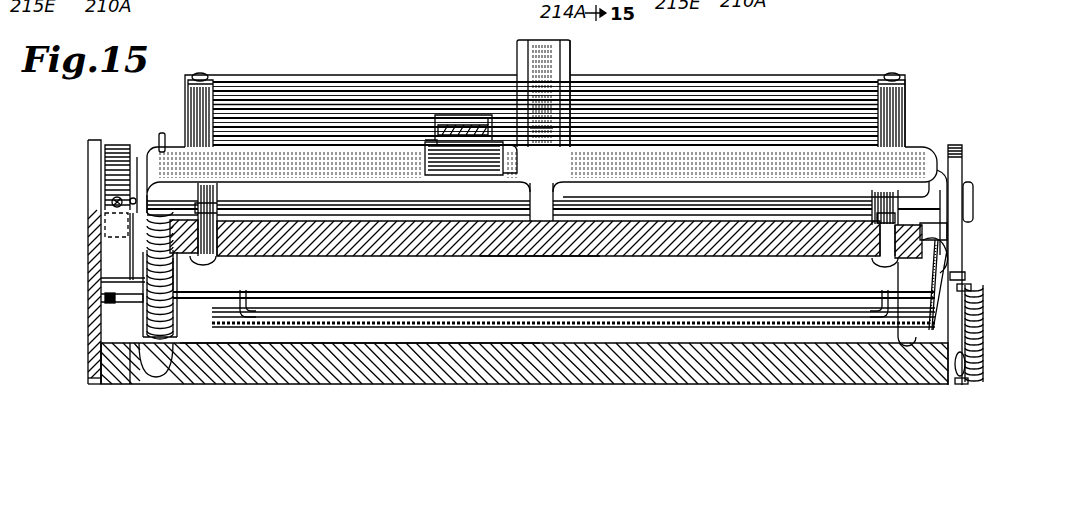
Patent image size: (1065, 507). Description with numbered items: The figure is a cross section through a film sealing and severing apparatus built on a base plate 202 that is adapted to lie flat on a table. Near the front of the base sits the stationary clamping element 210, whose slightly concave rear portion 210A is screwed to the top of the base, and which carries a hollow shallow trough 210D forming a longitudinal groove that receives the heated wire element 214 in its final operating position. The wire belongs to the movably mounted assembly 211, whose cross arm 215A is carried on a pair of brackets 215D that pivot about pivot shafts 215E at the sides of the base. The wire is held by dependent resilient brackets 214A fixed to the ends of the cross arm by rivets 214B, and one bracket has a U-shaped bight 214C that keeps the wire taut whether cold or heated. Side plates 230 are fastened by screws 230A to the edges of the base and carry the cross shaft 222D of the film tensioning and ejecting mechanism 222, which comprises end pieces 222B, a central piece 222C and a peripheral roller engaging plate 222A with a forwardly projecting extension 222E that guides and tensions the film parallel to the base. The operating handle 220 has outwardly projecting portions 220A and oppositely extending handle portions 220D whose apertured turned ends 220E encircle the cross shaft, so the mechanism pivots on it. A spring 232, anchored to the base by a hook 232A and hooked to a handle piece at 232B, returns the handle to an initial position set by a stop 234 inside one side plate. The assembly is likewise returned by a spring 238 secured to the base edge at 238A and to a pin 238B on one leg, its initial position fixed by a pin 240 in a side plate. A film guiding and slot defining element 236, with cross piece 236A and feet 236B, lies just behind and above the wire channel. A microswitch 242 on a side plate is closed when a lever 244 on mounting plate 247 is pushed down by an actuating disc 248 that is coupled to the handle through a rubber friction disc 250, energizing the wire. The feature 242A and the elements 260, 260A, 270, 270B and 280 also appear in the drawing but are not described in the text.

The base plate 202 is at (665, 388).
The stationary clamping element 210 is at (257, 330).
The concave rear portion 210A is at (367, 335).
The hollow shallow trough 210D is at (467, 332).
The movably mounted assembly 211 is at (393, 254).
The heated wire element 214 is at (913, 304).
The resilient brackets 214A is at (175, 279).
The rivets 214B is at (216, 262).
The U-shaped bight 214C is at (947, 233).
The cross arm 215A is at (529, 257).
The brackets 215D is at (143, 314).
The pivot shafts 215E is at (118, 380).
The operating handle 220 is at (515, 53).
The outwardly projecting portions 220A is at (571, 50).
The handle portions 220D is at (330, 148).
The apertured turned ends 220E is at (138, 191).
The film tensioning and ejecting mechanism 222 is at (746, 81).
The peripheral roller engaging plate 222A is at (664, 103).
The end pieces 222B is at (190, 100).
The central piece 222C is at (555, 128).
The cross shaft 222D is at (478, 204).
The forwardly projecting extension 222E is at (677, 285).
The side plates 230 is at (88, 156).
The screws 230A is at (90, 367).
The spring 232 is at (150, 281).
The hook 232A is at (170, 345).
The spring hooking point 232B is at (163, 133).
The stop 234 is at (967, 224).
The film guiding and slot defining element 236 is at (580, 284).
The cross piece 236A is at (600, 304).
The feet 236B is at (240, 297).
The spring 238 is at (985, 316).
The spring anchoring point 238A is at (963, 383).
The pin 238B is at (972, 288).
The pin 240 is at (115, 299).
The microswitch 242 is at (105, 255).
The slide plate recess 242A is at (115, 216).
The lever 244 is at (111, 208).
The mounting plate 247 is at (88, 383).
The actuating disc 248 is at (108, 146).
The rubber friction disc 250 is at (133, 197).
The circuit module 260 is at (424, 158).
The circuit module tab 260A is at (431, 139).
The connector housing 270 is at (452, 125).
The connector contact strip 270B is at (467, 120).
The connector cover 280 is at (478, 117).